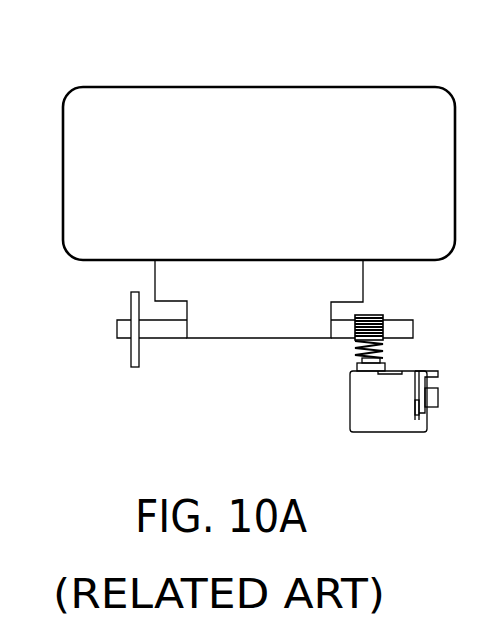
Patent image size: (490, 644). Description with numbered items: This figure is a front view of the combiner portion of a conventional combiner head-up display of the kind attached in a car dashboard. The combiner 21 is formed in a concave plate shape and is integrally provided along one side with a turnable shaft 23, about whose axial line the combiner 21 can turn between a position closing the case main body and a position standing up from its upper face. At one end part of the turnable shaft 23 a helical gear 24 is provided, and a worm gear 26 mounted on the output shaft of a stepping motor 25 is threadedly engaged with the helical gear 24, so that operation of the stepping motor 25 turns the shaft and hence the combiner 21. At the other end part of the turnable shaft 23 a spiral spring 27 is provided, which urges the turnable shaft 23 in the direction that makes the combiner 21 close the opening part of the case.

The combiner 21 is at (350, 108).
The turnable shaft 23 is at (162, 332).
The helical gear 24 is at (368, 322).
The stepping motor 25 is at (373, 415).
The worm gear 26 is at (383, 348).
The spiral spring 27 is at (130, 355).